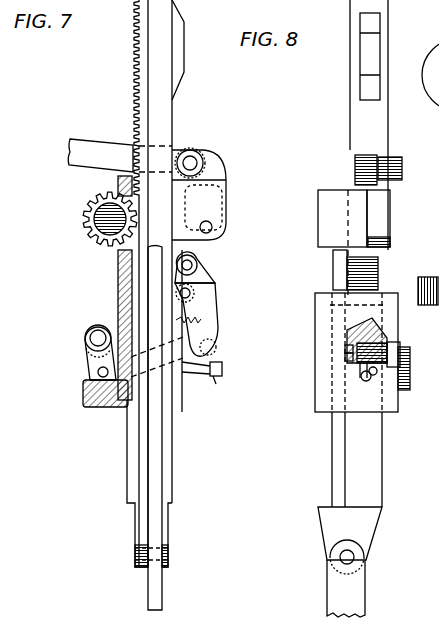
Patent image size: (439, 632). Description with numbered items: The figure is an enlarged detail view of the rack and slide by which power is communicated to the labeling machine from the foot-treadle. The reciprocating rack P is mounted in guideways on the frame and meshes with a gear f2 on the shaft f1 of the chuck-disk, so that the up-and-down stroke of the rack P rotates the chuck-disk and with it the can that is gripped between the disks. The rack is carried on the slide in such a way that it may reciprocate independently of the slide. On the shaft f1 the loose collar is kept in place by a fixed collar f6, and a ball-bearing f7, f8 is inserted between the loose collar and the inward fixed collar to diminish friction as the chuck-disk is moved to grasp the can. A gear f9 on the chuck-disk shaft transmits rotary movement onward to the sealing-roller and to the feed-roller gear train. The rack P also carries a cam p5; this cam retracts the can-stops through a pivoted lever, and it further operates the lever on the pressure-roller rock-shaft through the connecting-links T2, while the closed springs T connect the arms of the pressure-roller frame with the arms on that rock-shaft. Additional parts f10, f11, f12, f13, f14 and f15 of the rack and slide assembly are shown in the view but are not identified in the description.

In FIG. 7, the rack P is at (147, 283).
In FIG. 8, the rack P is at (369, 125).
In FIG. 7, the cam p5 is at (184, 62).
In FIG. 8, the cam p5 is at (368, 58).
In FIG. 7, the connecting-links T2 is at (120, 155).
In FIG. 8, the closed springs T is at (403, 168).
In FIG. 7, the shaft f1 is at (86, 218).
In FIG. 7, the gear f2 is at (84, 229).
In FIG. 7, the fixed collar f6 is at (215, 283).
In FIG. 7, the ball-bearing f7 is at (190, 295).
In FIG. 7, the ball-bearing f8 is at (200, 268).
In FIG. 8, the gear f9 is at (352, 353).
In FIG. 8, the pawl f10 is at (347, 350).
In FIG. 8, the cam f11 is at (393, 333).
In FIG. 7, the pin f12 is at (187, 356).
In FIG. 7, the link f13 is at (90, 360).
In FIG. 8, the link f13 is at (405, 370).
In FIG. 7, the pin f14 is at (216, 384).
In FIG. 8, the pin f14 is at (352, 362).
In FIG. 7, the screw f15 is at (222, 370).
In FIG. 8, the screw f15 is at (369, 381).